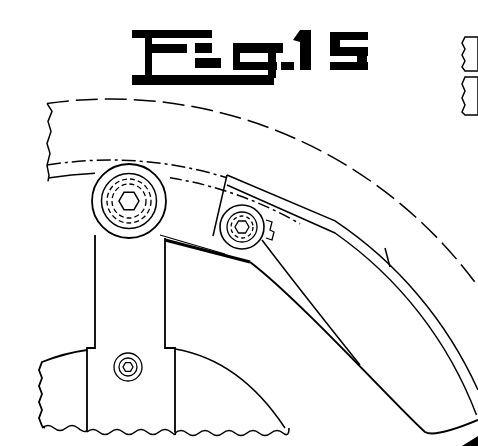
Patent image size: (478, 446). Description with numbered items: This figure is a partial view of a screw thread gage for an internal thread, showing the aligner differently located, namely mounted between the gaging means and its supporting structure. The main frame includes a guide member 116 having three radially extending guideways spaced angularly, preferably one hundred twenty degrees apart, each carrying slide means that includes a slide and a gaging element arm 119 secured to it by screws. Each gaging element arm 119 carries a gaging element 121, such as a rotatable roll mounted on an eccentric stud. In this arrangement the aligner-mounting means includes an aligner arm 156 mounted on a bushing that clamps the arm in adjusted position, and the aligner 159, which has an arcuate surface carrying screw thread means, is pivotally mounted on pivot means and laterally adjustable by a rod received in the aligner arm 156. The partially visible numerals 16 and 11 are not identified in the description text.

The gaging element 121 is at (122, 167).
The aligner arm 156 is at (188, 195).
The aligner 159 is at (380, 377).
The gaging element arm 119 is at (155, 299).
The guide member 116 is at (237, 385).
The rail (partial) 16 is at (390, 266).
The frame member (partial) 11 is at (467, 106).